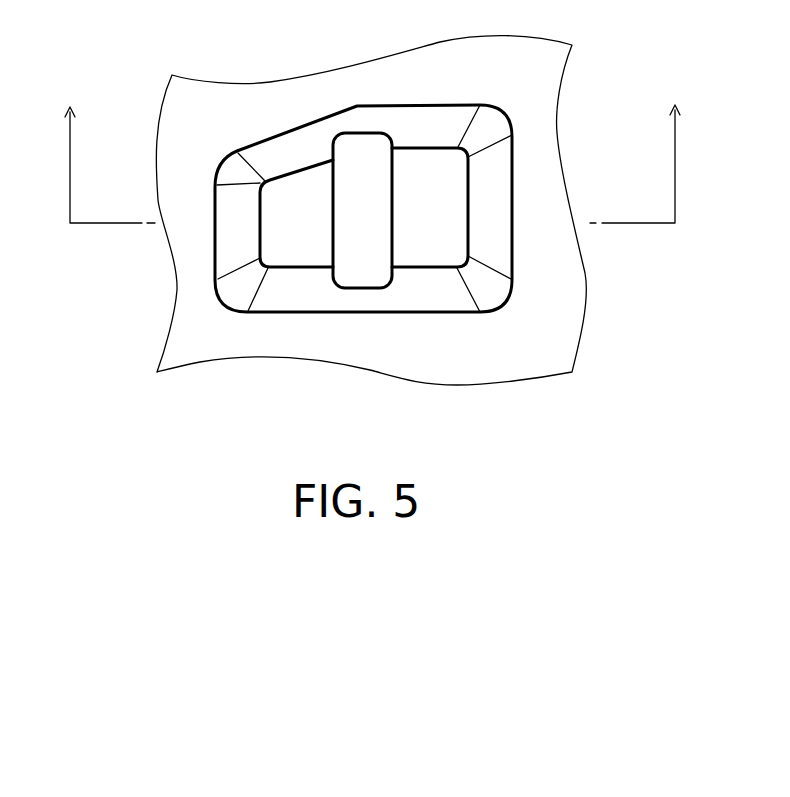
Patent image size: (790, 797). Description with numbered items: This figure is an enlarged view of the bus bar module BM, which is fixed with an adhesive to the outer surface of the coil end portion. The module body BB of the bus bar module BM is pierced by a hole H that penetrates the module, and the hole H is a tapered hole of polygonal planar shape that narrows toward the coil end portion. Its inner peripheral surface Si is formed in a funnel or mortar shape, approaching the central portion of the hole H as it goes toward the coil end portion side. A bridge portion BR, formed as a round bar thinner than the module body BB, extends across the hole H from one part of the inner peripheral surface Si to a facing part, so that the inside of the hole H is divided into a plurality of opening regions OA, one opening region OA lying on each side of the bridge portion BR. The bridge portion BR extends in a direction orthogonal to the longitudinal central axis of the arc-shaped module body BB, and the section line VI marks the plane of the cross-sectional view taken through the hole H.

The bus bar module BM is at (167, 258).
The module body BB is at (547, 353).
The hole H is at (423, 180).
The inner peripheral surface Si is at (288, 158).
The opening region OA is at (320, 235).
The bridge portion BR is at (362, 150).
The section line VI is at (371, 148).